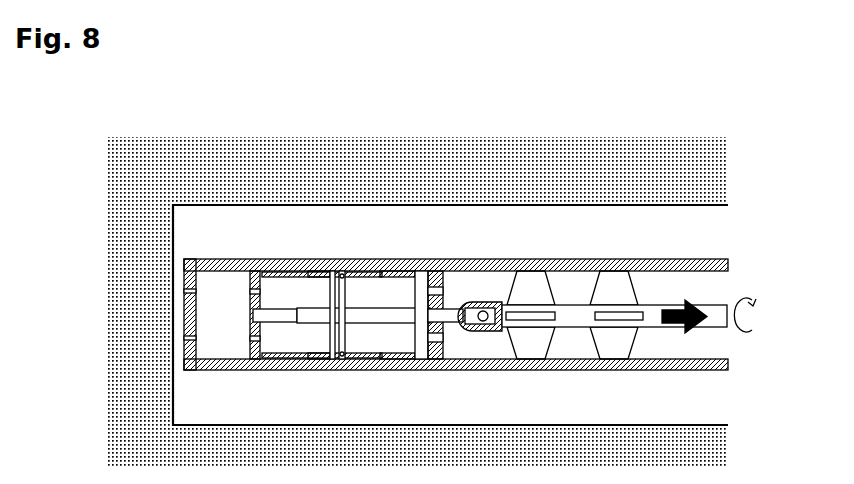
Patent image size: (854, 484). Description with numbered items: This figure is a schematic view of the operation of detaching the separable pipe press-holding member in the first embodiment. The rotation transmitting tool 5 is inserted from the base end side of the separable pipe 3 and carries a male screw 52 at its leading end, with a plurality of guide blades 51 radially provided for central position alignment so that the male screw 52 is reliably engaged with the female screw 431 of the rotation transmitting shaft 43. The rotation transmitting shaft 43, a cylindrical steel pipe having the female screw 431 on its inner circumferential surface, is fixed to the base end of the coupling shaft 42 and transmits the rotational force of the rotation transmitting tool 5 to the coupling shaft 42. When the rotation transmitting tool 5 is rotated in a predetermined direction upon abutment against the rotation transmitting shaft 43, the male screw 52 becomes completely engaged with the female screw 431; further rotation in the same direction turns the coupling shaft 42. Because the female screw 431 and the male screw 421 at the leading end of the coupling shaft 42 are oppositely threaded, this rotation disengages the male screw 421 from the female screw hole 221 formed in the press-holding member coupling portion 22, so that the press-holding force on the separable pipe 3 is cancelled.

The separable pipe 3 is at (677, 259).
The rotation transmitting tool 5 is at (576, 305).
The guide blades 51 is at (622, 268).
The male screw 52 is at (500, 301).
The press-holding member coupling portion 22 is at (279, 312).
The female screw hole 221 is at (251, 310).
The coupling shaft 42 is at (363, 306).
The male screw 421 is at (295, 267).
The rotation transmitting shaft 43 is at (486, 304).
The female screw 431 is at (493, 304).